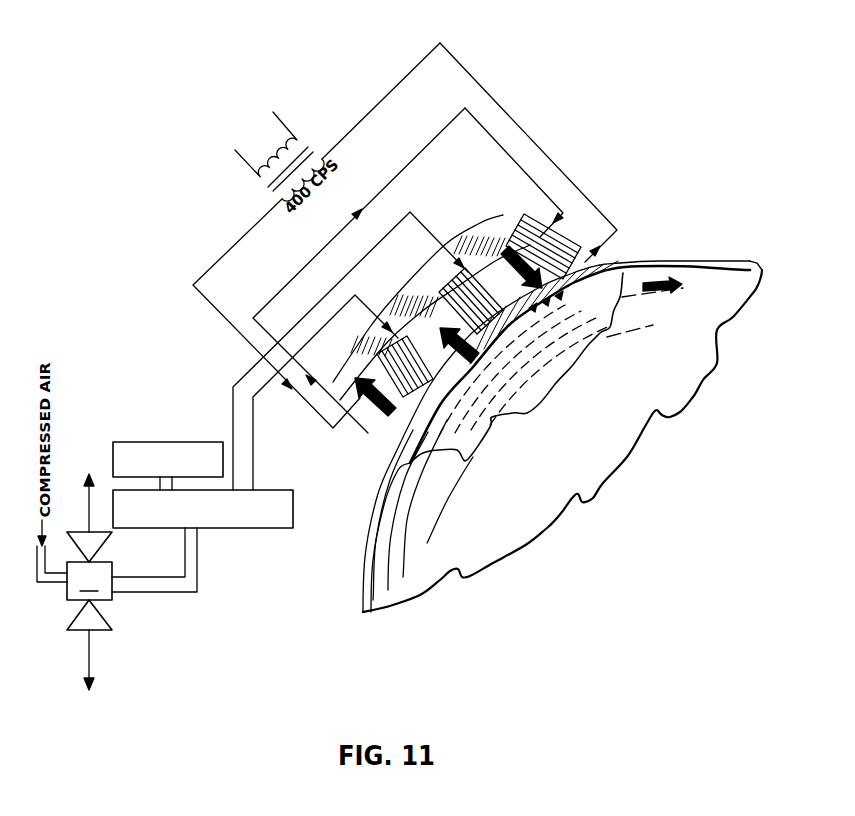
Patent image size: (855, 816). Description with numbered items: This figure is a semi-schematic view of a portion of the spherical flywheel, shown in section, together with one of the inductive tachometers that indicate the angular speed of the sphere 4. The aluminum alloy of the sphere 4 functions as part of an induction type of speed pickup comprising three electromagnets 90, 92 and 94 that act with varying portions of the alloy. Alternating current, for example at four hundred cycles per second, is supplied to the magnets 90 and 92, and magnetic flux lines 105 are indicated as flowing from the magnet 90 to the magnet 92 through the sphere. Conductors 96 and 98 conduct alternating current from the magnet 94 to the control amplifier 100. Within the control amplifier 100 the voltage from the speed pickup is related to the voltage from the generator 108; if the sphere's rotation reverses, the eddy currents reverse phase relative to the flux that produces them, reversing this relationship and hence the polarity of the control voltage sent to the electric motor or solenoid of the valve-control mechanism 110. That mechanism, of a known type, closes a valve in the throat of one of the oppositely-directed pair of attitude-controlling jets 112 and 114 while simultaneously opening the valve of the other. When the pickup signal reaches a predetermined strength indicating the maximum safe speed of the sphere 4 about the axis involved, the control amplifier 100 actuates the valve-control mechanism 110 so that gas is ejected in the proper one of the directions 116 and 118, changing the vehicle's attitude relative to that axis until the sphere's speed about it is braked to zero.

The sphere 4 is at (636, 267).
The electromagnet 90 is at (553, 238).
The electromagnet 92 is at (377, 440).
The electromagnet 94 is at (447, 293).
The conductor 96 is at (331, 293).
The conductor 98 is at (311, 339).
The control amplifier 100 is at (275, 528).
The magnetic flux lines 105 is at (570, 343).
The generator 108 is at (167, 442).
The valve-control mechanism 110 is at (89, 581).
The attitude-controlling jet 112 is at (107, 541).
The attitude-controlling jet 114 is at (106, 608).
The direction 116 is at (83, 503).
The direction 118 is at (83, 660).